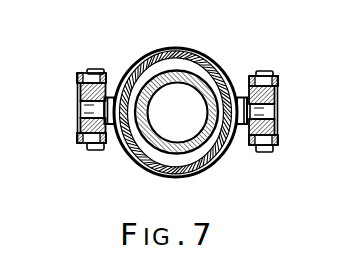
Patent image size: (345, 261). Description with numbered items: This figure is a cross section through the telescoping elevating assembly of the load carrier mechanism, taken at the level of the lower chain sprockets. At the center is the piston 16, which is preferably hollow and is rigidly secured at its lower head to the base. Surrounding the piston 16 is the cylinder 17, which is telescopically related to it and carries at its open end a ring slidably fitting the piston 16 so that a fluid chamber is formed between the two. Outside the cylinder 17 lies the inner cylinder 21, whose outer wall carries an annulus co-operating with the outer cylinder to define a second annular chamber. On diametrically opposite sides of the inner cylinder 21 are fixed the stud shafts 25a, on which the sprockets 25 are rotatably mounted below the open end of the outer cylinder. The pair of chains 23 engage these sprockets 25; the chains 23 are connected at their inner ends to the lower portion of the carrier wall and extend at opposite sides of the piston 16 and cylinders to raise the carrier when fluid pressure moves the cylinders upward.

The piston 16 is at (196, 137).
The cylinder 17 is at (182, 63).
The inner cylinder 21 is at (147, 53).
The pair of chains 23 is at (78, 143).
The sprockets 25 is at (79, 136).
The stud shafts 25a is at (289, 101).